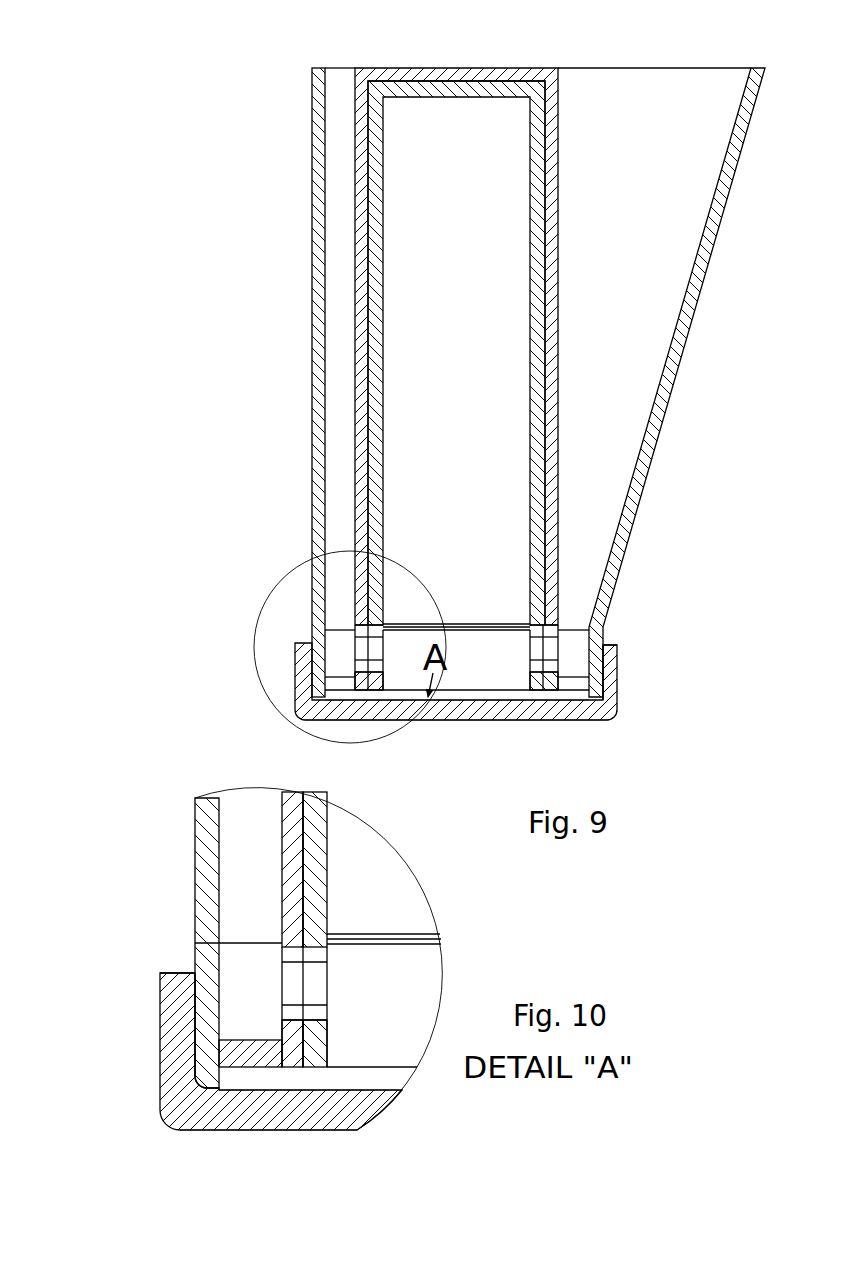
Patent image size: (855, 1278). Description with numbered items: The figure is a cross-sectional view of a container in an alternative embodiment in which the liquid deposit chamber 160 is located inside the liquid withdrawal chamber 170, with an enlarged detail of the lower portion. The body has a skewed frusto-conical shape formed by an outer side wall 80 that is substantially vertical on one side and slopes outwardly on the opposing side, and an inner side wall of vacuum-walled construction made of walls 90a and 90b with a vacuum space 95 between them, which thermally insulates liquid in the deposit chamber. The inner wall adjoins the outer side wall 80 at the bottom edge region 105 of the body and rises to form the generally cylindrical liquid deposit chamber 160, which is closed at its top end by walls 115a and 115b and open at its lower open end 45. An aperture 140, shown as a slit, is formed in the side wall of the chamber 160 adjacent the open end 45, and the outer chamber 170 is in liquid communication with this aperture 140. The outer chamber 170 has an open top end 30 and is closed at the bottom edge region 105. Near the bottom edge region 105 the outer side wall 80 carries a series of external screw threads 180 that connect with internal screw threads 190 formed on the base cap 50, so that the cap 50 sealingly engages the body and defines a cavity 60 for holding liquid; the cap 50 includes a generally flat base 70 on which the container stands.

In FIG. 9, the open top end 30 is at (666, 80).
In FIG. 9, the open end 45 is at (487, 690).
In FIG. 10, the open end 45 is at (379, 1090).
In FIG. 9, the base cap 50 is at (617, 702).
In FIG. 10, the base cap 50 is at (162, 1093).
In FIG. 9, the cavity 60 is at (392, 736).
In FIG. 10, the cavity 60 is at (337, 1087).
In FIG. 9, the flat base 70 is at (552, 763).
In FIG. 10, the flat base 70 is at (266, 1131).
In FIG. 9, the outer side wall 80 is at (706, 273).
In FIG. 10, the outer side wall 80 is at (207, 868).
In FIG. 10, the wall 90a is at (322, 893).
In FIG. 10, the wall 90b is at (293, 860).
In FIG. 10, the vacuum space 95 is at (308, 828).
In FIG. 9, the bottom edge region 105 is at (668, 718).
In FIG. 9, the wall 115a is at (456, 316).
In FIG. 9, the wall 115b is at (508, 326).
In FIG. 9, the aperture 140 is at (360, 648).
In FIG. 10, the aperture 140 is at (315, 980).
In FIG. 9, the liquid deposit chamber 160 is at (458, 372).
In FIG. 9, the liquid withdrawal chamber 170 is at (638, 194).
In FIG. 9, the external screw threads 180 is at (600, 655).
In FIG. 10, the external screw threads 180 is at (190, 998).
In FIG. 9, the internal screw threads 190 is at (600, 678).
In FIG. 10, the internal screw threads 190 is at (190, 1041).